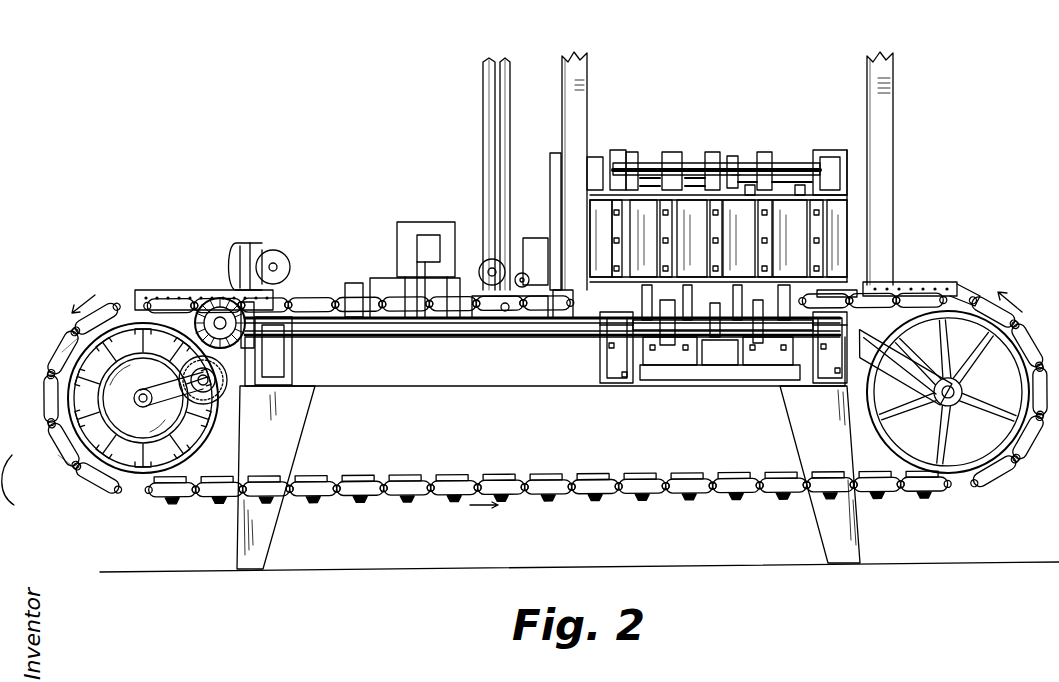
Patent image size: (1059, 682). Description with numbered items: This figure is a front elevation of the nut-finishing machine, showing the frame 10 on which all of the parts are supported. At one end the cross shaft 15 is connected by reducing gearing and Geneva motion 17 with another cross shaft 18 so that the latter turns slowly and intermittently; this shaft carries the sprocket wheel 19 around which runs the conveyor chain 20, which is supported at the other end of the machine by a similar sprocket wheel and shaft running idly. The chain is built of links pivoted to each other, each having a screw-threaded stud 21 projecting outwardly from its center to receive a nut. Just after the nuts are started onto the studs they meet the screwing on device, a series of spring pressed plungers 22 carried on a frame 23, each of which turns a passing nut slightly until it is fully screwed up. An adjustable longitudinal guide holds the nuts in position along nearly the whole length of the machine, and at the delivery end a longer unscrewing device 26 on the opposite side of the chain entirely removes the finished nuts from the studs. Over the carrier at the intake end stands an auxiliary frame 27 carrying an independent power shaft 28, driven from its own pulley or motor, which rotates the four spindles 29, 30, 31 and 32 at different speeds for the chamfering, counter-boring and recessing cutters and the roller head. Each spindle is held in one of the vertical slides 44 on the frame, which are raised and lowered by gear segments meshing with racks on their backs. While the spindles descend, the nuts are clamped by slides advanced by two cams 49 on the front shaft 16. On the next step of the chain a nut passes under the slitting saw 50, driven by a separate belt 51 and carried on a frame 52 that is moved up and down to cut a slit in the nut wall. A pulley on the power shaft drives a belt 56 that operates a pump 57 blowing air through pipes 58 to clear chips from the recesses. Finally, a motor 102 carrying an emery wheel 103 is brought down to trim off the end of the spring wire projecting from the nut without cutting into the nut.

The frame 10 is at (515, 375).
The cross shaft 15 is at (210, 298).
The front shaft 16 is at (388, 330).
The Geneva motion 17 is at (80, 402).
The cross shaft 18 is at (143, 398).
The sprocket wheel 19 is at (55, 372).
The conveyor chain 20 is at (68, 345).
The screw-threaded stud 21 is at (1008, 315).
The spring pressed plunger 22 is at (960, 283).
The frame 23 is at (910, 282).
The unscrewing device 26 is at (143, 290).
The auxiliary frame 27 is at (912, 206).
The power shaft 28 is at (660, 166).
The spindle 29 is at (808, 160).
The spindle 30 is at (748, 160).
The spindle 31 is at (712, 160).
The spindle 32 is at (640, 160).
The vertical slide 44 is at (718, 238).
The cam 49 is at (668, 362).
The slitting saw 50 is at (545, 325).
The belt 51 is at (501, 60).
The frame 52 is at (537, 245).
The belt 56 is at (555, 185).
The pump 57 is at (575, 322).
The pipe 58 is at (588, 358).
The motor 102 is at (254, 243).
The emery wheel 103 is at (290, 262).